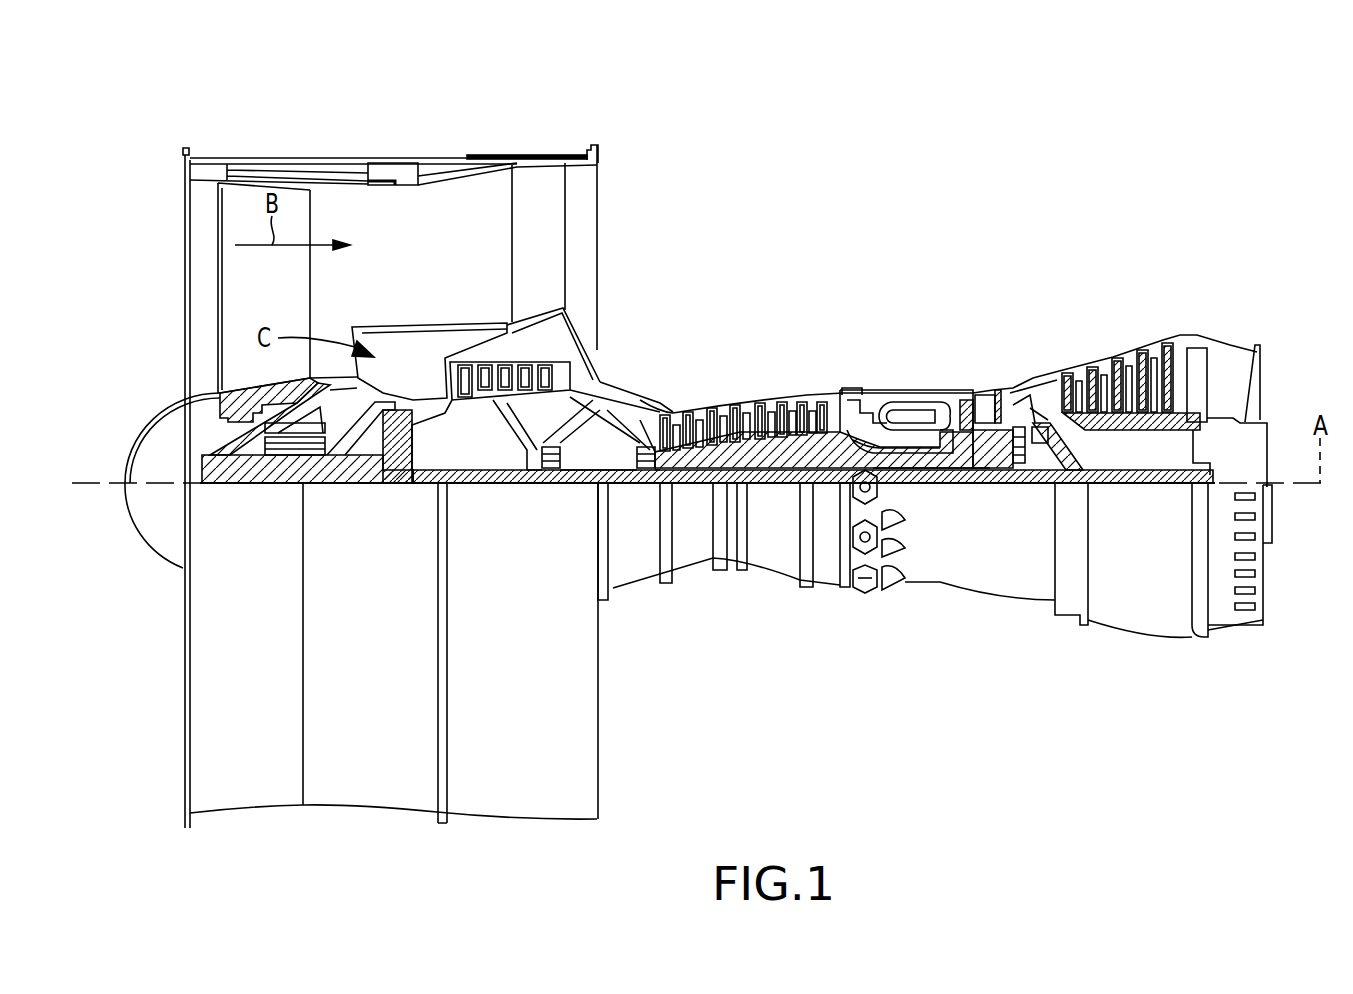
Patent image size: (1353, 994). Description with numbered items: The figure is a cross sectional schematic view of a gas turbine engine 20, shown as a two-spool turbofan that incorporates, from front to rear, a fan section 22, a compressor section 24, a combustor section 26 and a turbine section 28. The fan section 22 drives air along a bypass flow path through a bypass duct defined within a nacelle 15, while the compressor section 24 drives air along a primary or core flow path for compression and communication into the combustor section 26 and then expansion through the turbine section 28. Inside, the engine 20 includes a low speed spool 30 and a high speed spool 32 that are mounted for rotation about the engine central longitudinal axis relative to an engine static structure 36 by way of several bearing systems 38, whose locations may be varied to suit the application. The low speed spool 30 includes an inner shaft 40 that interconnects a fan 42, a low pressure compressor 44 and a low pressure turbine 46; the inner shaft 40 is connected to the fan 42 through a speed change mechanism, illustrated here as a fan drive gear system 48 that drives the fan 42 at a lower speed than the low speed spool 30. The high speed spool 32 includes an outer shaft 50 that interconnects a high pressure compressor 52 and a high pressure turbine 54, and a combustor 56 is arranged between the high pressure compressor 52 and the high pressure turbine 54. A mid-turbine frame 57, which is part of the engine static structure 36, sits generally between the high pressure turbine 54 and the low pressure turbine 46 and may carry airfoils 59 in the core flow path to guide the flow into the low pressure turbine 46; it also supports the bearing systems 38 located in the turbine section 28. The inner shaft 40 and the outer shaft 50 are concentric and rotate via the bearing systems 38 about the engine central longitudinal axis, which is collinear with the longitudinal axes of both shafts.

The nacelle 15 is at (384, 172).
The gas turbine engine 20 is at (953, 147).
The fan section 22 is at (300, 130).
The compressor section 24 is at (655, 353).
The combustor section 26 is at (912, 342).
The turbine section 28 is at (1083, 315).
The low speed spool 30 is at (777, 487).
The high speed spool 32 is at (838, 433).
The engine static structure 36 is at (828, 560).
The bearing systems 38 is at (552, 487).
The inner shaft 40 is at (624, 487).
The fan 42 is at (275, 285).
The low pressure compressor 44 is at (527, 372).
The low pressure turbine 46 is at (1128, 358).
The fan drive gear system 48 is at (402, 487).
The outer shaft 50 is at (912, 470).
The high pressure compressor 52 is at (778, 403).
The high pressure turbine 54 is at (978, 393).
The combustor 56 is at (936, 414).
The mid-turbine frame 57 is at (1036, 362).
The airfoils 59 is at (1030, 408).